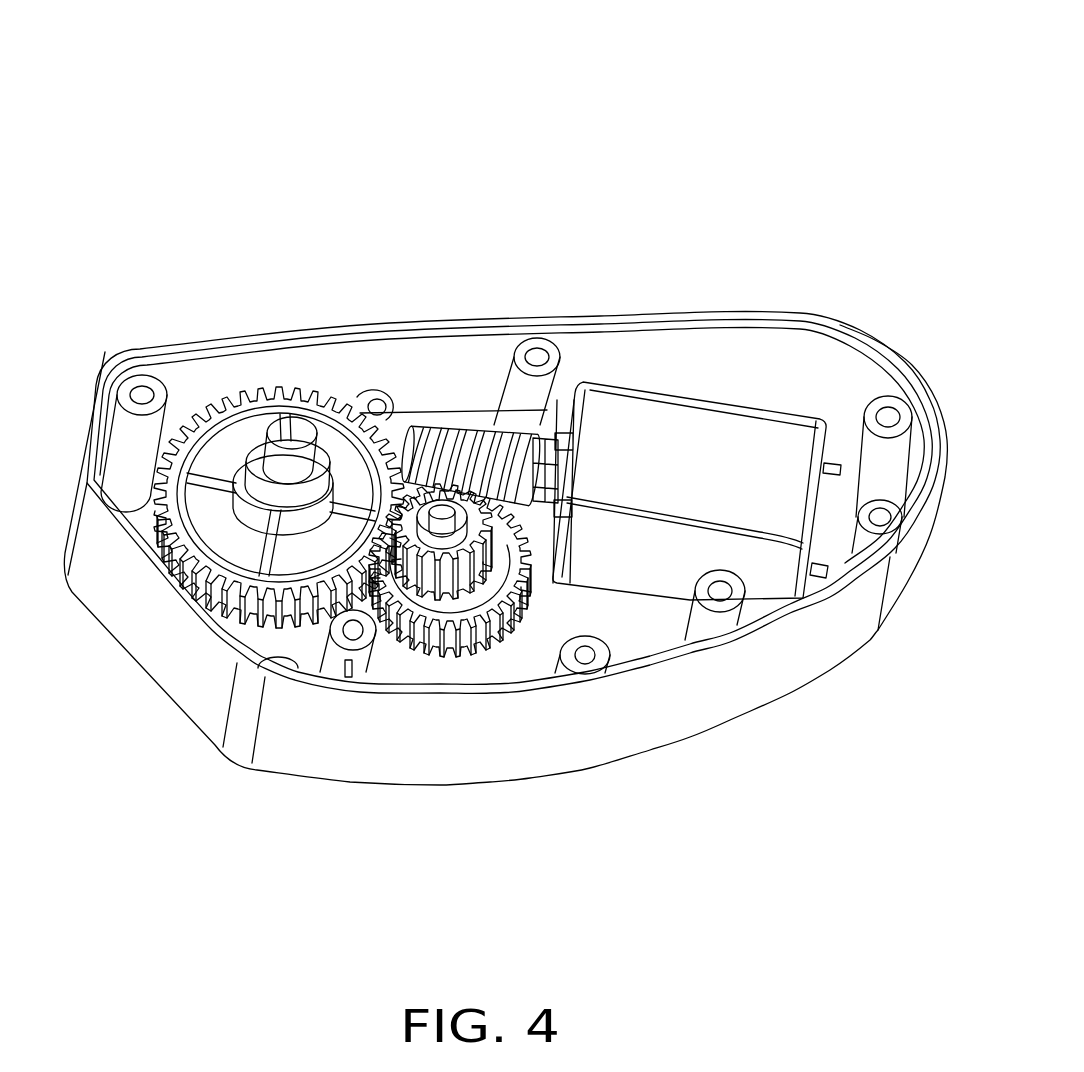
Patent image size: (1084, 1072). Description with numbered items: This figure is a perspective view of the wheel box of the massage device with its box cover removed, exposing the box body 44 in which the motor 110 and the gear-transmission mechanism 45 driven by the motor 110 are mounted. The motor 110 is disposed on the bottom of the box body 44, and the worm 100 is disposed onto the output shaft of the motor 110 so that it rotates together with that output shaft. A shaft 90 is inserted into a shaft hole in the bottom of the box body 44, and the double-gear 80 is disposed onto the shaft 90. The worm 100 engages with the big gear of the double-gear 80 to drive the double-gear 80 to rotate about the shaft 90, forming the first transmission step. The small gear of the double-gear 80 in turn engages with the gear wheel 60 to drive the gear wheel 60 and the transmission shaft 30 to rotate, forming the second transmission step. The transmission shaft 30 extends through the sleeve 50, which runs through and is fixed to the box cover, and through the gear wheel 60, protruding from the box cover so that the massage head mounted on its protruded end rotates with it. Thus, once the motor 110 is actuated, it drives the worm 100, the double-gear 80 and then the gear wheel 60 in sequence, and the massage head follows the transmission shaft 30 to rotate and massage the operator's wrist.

The transmission shaft 30 is at (292, 433).
The box body 44 is at (818, 373).
The gear-transmission mechanism 45 is at (577, 163).
The sleeve 50 is at (320, 410).
The gear wheel 60 is at (233, 400).
The double-gear 80 is at (493, 427).
The shaft 90 is at (432, 415).
The worm 100 is at (517, 433).
The motor 110 is at (667, 453).